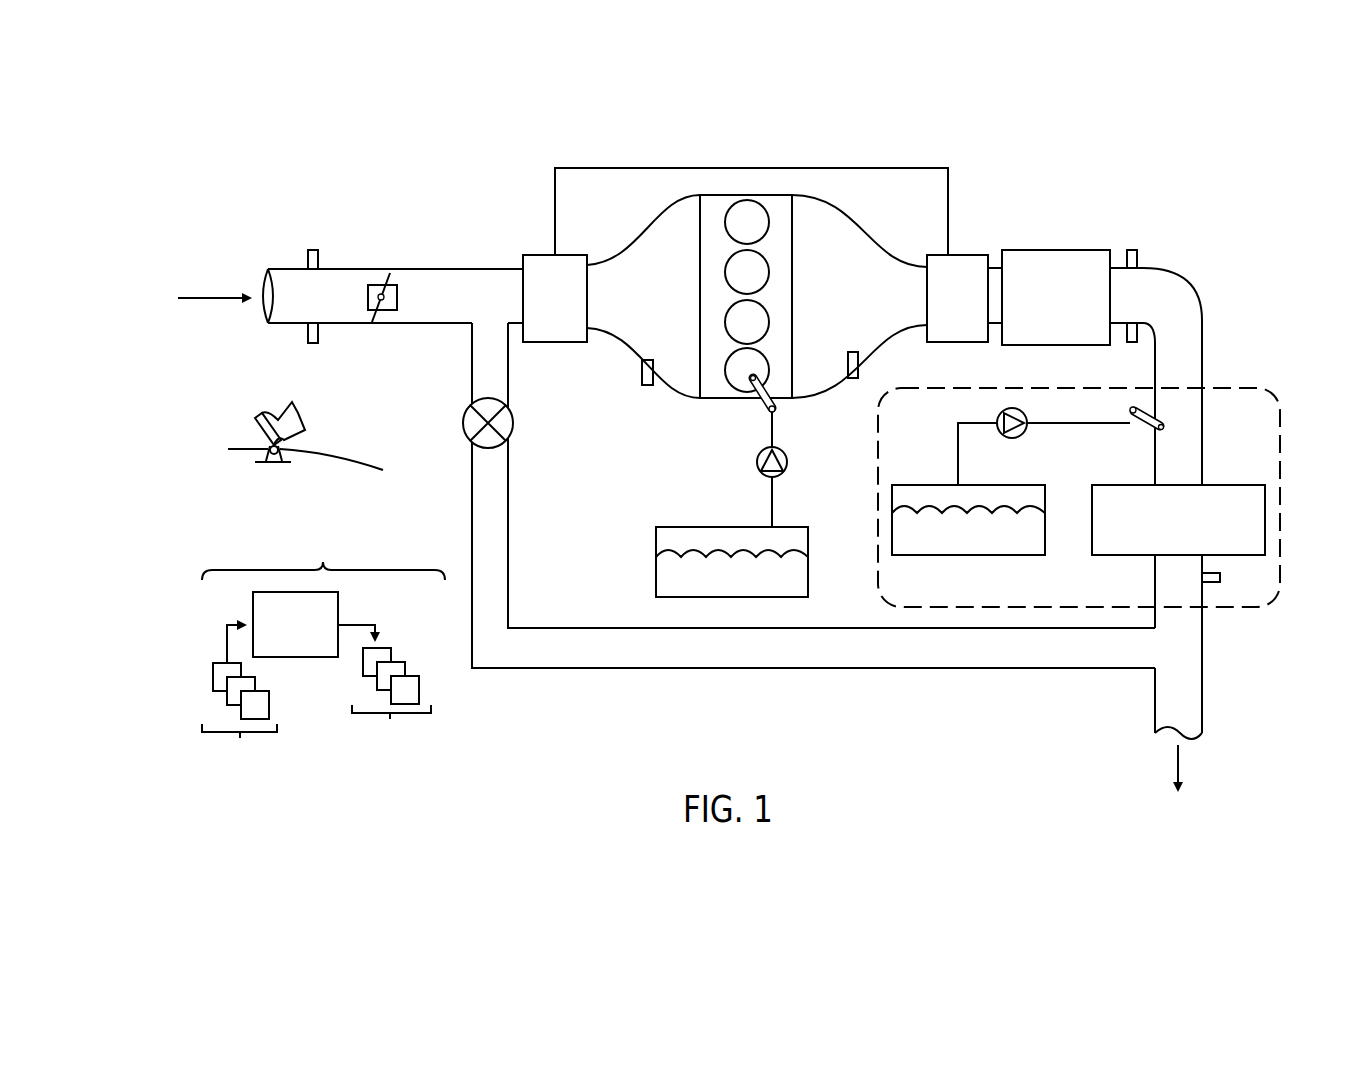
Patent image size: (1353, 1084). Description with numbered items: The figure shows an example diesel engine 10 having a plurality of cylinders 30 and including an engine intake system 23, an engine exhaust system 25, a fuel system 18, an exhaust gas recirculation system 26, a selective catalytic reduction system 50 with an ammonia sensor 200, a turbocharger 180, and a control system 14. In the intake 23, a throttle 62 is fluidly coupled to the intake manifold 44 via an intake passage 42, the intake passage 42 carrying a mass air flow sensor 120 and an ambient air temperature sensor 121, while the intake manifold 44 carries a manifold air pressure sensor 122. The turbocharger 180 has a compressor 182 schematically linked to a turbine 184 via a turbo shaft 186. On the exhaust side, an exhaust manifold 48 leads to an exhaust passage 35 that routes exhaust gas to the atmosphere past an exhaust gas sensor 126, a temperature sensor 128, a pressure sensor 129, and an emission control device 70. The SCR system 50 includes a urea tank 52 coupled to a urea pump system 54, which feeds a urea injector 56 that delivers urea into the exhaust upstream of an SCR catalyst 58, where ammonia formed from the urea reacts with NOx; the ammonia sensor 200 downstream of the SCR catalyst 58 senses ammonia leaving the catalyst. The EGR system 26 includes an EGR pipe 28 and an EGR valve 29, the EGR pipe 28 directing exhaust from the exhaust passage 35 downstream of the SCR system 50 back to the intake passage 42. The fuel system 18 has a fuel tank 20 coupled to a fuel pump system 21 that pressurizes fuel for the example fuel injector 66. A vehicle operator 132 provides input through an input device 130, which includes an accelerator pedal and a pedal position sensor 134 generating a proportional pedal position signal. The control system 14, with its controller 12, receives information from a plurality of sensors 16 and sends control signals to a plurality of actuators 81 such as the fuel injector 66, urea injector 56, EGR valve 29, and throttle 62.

The diesel engine 10 is at (336, 118).
The controller 12 is at (295, 624).
The control system 14 is at (323, 650).
The sensors 16 is at (240, 704).
The fuel system 18 is at (716, 487).
The fuel tank 20 is at (808, 576).
The fuel pump system 21 is at (762, 455).
The engine intake system 23 is at (477, 212).
The engine exhaust system 25 is at (1237, 238).
The exhaust gas recirculation system 26 is at (890, 690).
The EGR pipe 28 is at (813, 553).
The EGR valve 29 is at (511, 430).
The cylinders 30 is at (765, 215).
The exhaust passage 35 is at (903, 262).
The intake passage 42 is at (430, 326).
The intake manifold 44 is at (643, 296).
The exhaust manifold 48 is at (859, 296).
The selective catalytic reduction system 50 is at (1218, 388).
The urea tank 52 is at (1002, 556).
The urea pump system 54 is at (1023, 433).
The urea injector 56 is at (1143, 430).
The SCR catalyst 58 is at (1110, 556).
The throttle 62 is at (397, 303).
The fuel injector 66 is at (770, 414).
The emission control device 70 is at (1050, 250).
The actuators 81 is at (388, 697).
The mass air flow sensor 120 is at (313, 344).
The ambient air temperature sensor 121 is at (313, 249).
The manifold air pressure sensor 122 is at (647, 386).
The exhaust gas sensor 126 is at (1138, 258).
The temperature sensor 128 is at (1132, 344).
The pressure sensor 129 is at (856, 360).
The input device 130 is at (262, 430).
The vehicle operator 132 is at (298, 417).
The pedal position sensor 134 is at (324, 465).
The turbocharger 180 is at (779, 241).
The compressor 182 is at (555, 298).
The turbine 184 is at (957, 298).
The turbo shaft 186 is at (786, 168).
The ammonia sensor 200 is at (1222, 580).